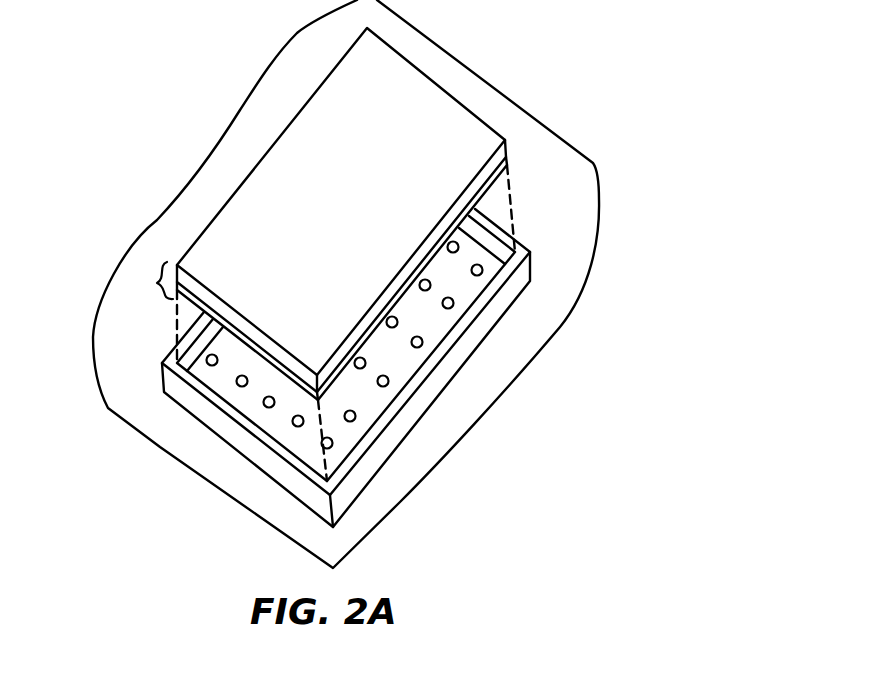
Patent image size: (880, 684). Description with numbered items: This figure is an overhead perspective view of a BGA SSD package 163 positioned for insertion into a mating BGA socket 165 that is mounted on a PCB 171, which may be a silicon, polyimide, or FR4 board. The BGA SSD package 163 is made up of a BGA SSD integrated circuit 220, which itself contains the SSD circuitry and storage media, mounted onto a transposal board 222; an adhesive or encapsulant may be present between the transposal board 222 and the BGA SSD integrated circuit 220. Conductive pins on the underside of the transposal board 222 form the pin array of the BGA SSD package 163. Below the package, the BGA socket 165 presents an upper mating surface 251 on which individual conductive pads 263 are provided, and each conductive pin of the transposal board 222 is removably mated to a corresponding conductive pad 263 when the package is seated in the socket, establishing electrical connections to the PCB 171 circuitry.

The PCB 171 is at (142, 352).
The BGA socket 165 is at (531, 278).
The upper mating surface 251 is at (252, 400).
The conductive pad 263 is at (389, 382).
The BGA SSD integrated circuit 220 is at (508, 163).
The transposal board 222 is at (508, 168).
The BGA SSD package 163 is at (157, 283).